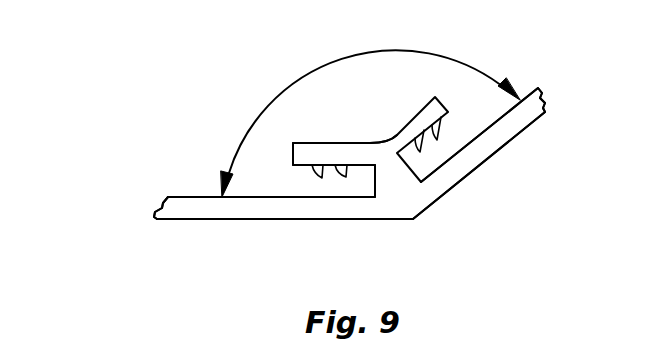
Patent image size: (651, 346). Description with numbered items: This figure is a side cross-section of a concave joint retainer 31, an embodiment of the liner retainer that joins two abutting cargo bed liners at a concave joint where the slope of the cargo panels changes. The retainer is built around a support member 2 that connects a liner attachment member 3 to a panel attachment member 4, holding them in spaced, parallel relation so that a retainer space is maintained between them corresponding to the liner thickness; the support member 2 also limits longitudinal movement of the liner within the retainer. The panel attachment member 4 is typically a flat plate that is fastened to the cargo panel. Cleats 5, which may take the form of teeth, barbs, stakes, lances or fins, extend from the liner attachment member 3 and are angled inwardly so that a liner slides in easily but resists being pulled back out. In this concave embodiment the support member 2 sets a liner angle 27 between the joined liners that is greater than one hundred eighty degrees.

The support member 2 is at (395, 200).
The liner attachment member 3 is at (357, 142).
The panel attachment member 4 is at (175, 212).
The cleats 5 is at (303, 176).
The liner angle 27 is at (378, 52).
The concave joint retainer 31 is at (265, 212).